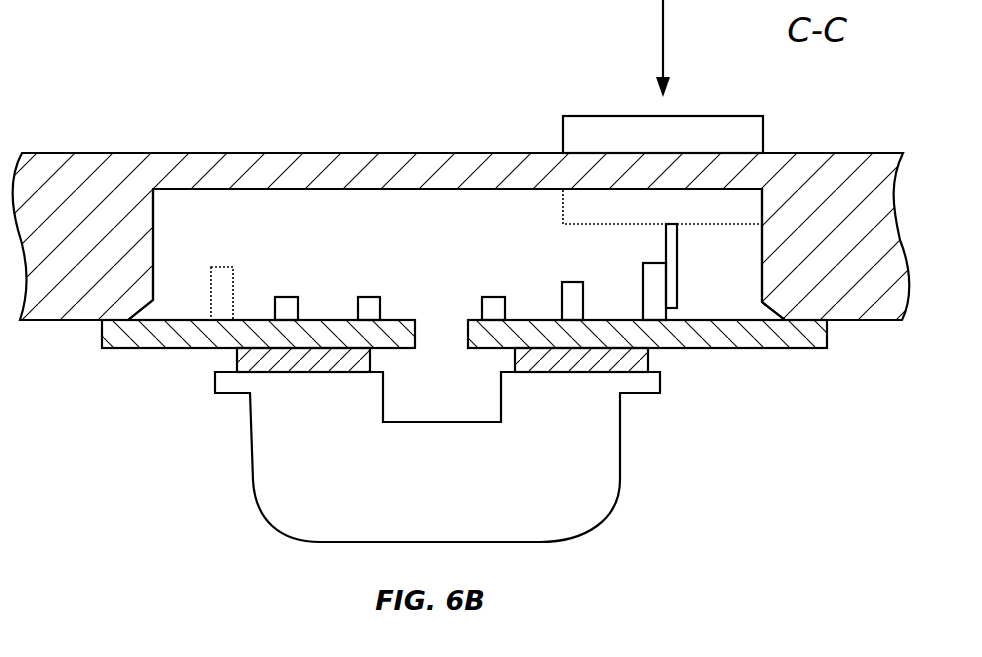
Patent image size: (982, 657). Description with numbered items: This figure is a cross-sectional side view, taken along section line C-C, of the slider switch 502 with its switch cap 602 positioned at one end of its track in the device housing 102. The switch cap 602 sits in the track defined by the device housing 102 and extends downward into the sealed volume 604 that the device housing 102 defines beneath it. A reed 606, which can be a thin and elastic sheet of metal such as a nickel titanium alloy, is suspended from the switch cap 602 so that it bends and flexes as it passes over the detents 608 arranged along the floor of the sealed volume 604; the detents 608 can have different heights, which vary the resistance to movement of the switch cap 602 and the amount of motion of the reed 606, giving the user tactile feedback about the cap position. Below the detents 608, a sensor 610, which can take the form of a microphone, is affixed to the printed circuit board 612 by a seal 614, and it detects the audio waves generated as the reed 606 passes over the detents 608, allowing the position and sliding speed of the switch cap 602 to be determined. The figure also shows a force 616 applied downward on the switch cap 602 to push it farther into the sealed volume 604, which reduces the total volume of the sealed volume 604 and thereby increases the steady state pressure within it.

The slider switch 502 is at (102, 122).
The device housing 102 is at (818, 248).
The switch cap 602 is at (655, 147).
The sealed volume 604 is at (198, 225).
The reed 606 is at (666, 250).
The detents 608 is at (373, 296).
The sensor 610 is at (420, 490).
The printed circuit board 612 is at (735, 349).
The seal 614 is at (237, 358).
The force 616 is at (682, 48).